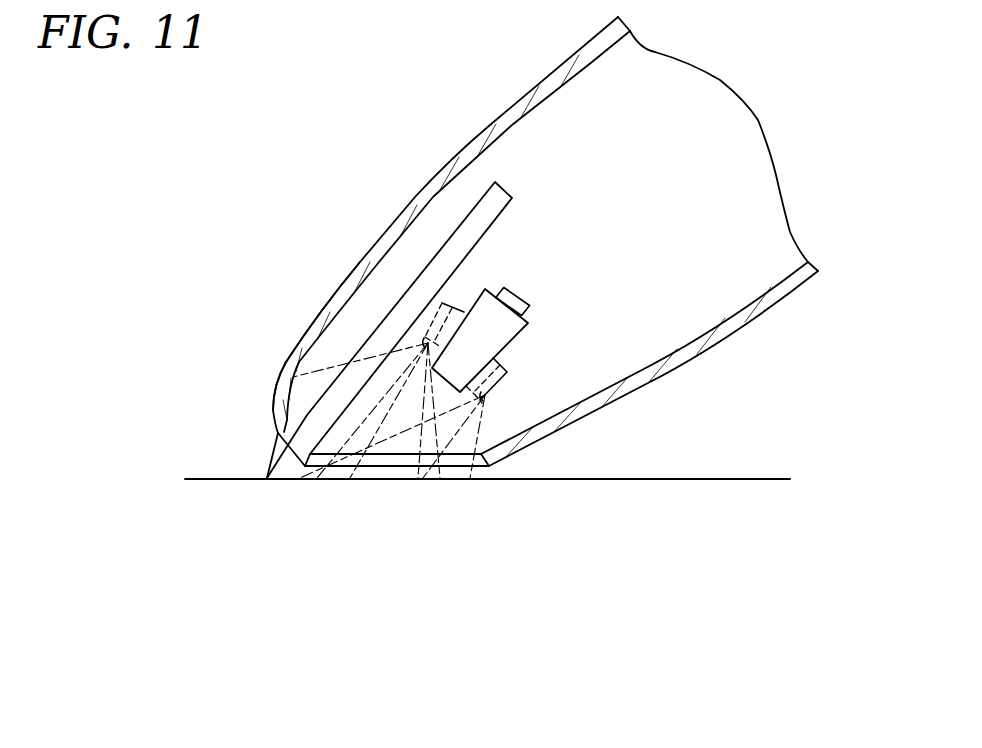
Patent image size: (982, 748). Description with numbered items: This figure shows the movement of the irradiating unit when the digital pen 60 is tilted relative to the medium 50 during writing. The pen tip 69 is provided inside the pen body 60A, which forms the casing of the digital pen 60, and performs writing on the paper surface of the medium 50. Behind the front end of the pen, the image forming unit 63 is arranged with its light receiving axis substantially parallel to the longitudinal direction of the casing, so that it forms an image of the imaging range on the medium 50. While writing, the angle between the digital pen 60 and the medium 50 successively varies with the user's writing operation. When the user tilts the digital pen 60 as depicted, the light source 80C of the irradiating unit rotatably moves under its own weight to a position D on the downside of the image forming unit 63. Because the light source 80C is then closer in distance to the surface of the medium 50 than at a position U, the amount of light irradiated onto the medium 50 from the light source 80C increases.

The digital pen 60 is at (434, 152).
The pen body 60A is at (342, 293).
The pen tip 69 is at (407, 288).
The image forming unit 63 is at (430, 356).
The position U is at (458, 302).
The position D is at (524, 343).
The light source 80C is at (487, 395).
The medium 50 is at (675, 479).